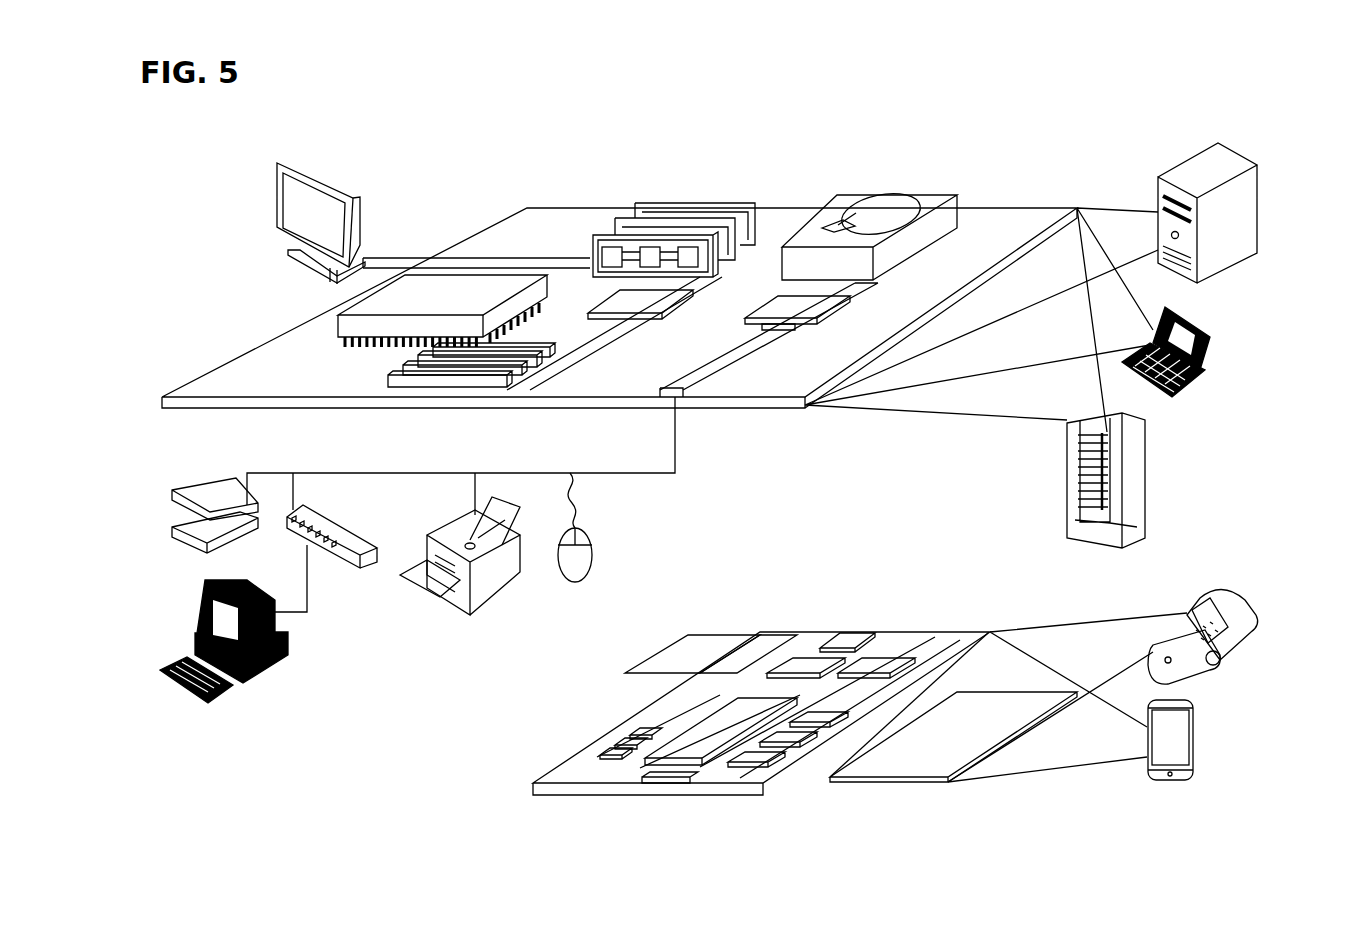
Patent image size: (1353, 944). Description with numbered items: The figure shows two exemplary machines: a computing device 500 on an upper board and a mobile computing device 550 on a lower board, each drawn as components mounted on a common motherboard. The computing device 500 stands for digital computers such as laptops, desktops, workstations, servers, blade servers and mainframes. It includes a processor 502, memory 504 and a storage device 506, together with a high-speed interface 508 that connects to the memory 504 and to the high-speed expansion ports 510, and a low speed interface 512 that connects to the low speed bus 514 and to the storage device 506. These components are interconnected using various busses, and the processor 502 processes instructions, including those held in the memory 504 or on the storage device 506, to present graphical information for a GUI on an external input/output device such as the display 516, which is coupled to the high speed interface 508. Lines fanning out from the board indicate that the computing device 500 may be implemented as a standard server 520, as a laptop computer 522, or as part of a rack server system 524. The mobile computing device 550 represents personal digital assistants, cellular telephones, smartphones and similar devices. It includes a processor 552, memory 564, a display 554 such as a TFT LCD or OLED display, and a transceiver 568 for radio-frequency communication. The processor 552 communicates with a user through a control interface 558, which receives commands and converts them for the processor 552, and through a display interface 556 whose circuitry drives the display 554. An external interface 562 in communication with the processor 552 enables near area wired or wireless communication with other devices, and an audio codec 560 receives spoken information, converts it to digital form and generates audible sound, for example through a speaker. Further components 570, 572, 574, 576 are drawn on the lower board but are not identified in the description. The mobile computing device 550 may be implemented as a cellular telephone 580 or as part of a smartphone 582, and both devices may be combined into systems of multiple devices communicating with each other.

The computing device 500 is at (452, 178).
The processor 502 is at (337, 320).
The memory 504 is at (645, 206).
The storage device 506 is at (860, 212).
The high-speed interface 508 is at (620, 300).
The high-speed expansion ports 510 is at (407, 368).
The low speed interface 512 is at (777, 303).
The low speed bus 514 is at (683, 399).
The display 516 is at (282, 164).
The standard server 520 is at (1156, 194).
The laptop computer 522 is at (1212, 325).
The rack server system 524 is at (1068, 512).
The mobile computing device 550 is at (513, 795).
The processor 552 is at (695, 762).
The display 554 is at (925, 768).
The display interface 556 is at (758, 762).
The control interface 558 is at (790, 740).
The audio codec 560 is at (808, 720).
The external interface 562 is at (664, 790).
The memory 564 is at (618, 744).
The transceiver 568 is at (880, 662).
The module 570 is at (855, 640).
The module 572 is at (737, 648).
The module 574 is at (675, 645).
The module 576 is at (805, 665).
The cellular telephone 580 is at (1195, 598).
The smartphone 582 is at (1148, 760).